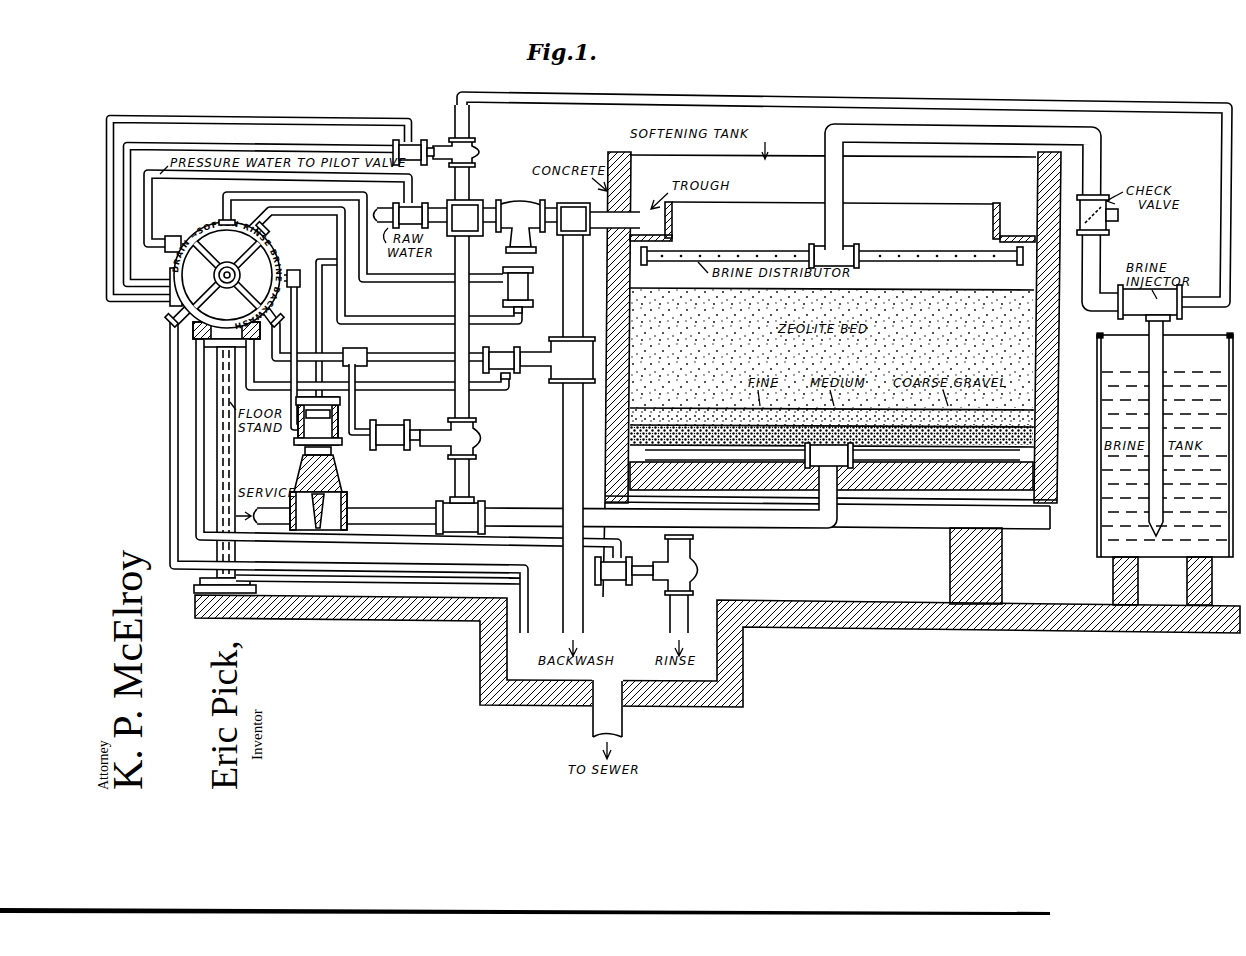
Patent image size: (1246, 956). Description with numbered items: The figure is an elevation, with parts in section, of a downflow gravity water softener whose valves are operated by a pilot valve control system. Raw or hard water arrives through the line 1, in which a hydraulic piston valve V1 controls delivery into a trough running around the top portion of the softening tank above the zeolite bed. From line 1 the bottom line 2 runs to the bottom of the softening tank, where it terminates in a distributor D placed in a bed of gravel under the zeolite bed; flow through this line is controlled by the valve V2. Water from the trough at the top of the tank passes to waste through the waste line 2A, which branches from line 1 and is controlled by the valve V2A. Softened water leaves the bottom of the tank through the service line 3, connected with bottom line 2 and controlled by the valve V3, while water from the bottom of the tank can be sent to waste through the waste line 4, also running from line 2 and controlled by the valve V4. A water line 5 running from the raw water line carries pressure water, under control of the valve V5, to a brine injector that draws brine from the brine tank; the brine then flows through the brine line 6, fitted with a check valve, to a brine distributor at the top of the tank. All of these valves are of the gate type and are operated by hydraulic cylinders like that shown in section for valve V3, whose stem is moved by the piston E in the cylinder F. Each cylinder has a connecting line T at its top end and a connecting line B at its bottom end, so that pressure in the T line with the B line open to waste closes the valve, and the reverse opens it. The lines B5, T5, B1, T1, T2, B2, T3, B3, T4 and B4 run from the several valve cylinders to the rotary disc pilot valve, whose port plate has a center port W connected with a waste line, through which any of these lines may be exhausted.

The water line 5 is at (771, 99).
The brine line 6 is at (950, 133).
The connecting line B of valve V5 B5 is at (272, 110).
The connecting line T of valve V5 T5 is at (272, 148).
The valve V5 is at (466, 152).
The raw water line 1 is at (432, 207).
The hydraulic piston valve V1 is at (469, 256).
The connecting line B of valve V1 B1 is at (393, 283).
The connecting line T of valve V1 T1 is at (412, 313).
The bottom line 2 is at (466, 320).
The waste line 2A is at (564, 324).
The valve V2A is at (542, 360).
The valve V2 is at (478, 436).
The connecting line T of valve V2 T2 is at (398, 360).
The connecting line B of valve V2 B2 is at (406, 420).
The connecting line T of valve V3 T3 is at (334, 354).
The connecting line T of valve V4 T4 is at (172, 368).
The connecting line B of valve V4 B4 is at (198, 386).
The connecting line B of valve V3 B3 is at (291, 433).
The piston E is at (340, 421).
The cylinder F is at (340, 455).
The center port W is at (229, 490).
The valve V3 is at (333, 496).
The service line 3 is at (404, 511).
The distributor D is at (832, 454).
The valve V4 is at (702, 572).
The waste line 4 is at (676, 615).